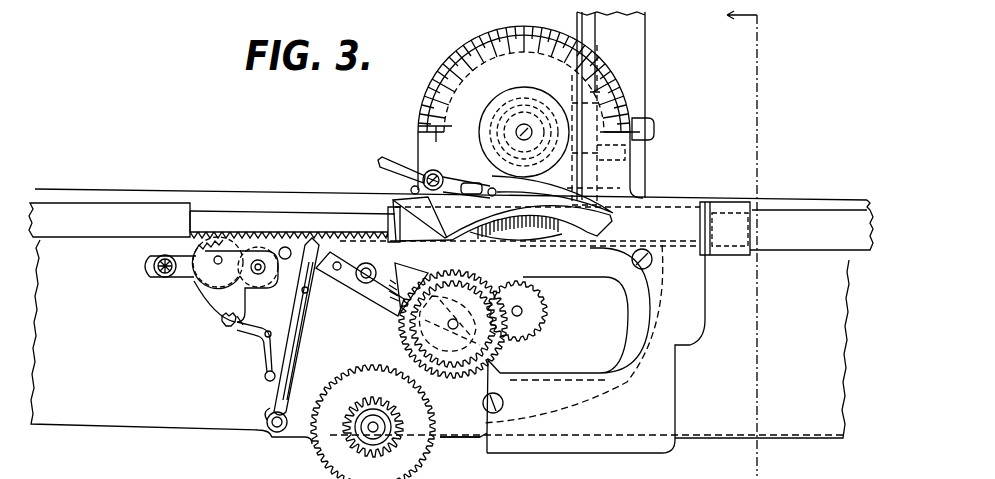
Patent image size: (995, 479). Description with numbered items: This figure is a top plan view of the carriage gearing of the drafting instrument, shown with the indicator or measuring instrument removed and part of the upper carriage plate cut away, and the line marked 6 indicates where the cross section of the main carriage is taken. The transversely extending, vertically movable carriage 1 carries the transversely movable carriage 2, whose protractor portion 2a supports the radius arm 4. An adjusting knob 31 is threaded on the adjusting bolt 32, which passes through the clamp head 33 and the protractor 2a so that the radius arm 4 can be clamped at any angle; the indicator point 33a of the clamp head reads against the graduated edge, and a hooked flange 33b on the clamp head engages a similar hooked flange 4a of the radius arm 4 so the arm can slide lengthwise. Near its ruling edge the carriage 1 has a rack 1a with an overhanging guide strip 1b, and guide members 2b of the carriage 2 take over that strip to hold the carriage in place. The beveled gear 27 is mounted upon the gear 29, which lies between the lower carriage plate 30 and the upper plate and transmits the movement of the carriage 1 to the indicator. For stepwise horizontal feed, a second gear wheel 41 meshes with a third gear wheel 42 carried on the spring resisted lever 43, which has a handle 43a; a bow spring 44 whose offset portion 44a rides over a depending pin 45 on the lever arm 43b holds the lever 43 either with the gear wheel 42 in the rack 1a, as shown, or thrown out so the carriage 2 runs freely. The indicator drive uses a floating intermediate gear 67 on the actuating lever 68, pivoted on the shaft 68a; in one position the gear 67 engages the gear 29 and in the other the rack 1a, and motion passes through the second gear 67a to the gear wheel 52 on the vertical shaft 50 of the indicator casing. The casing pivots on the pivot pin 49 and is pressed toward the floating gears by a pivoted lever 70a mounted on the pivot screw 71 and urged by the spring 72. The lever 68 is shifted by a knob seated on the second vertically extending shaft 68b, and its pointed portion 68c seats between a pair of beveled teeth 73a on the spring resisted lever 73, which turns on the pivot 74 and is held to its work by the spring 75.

The vertically movable carriage 1 is at (800, 440).
The rack 1a is at (340, 221).
The overhanging guide strip 1b is at (818, 219).
The transversely movable carriage 2 is at (695, 308).
The protractor 2a is at (452, 87).
The guide members 2b is at (735, 208).
The radius arm 4 is at (640, 74).
The hooked flange 4a is at (592, 24).
The section line 6— 6 is at (730, 243).
The second beveled gear 27 is at (372, 420).
The gear 29 is at (418, 420).
The lower carriage plate 30 is at (303, 434).
The adjusting knob 31 is at (508, 96).
The adjusting bolt 32 is at (530, 128).
The clamp head 33 is at (477, 103).
The indicator point 33a is at (642, 128).
The hooked flange 33b is at (612, 150).
The second gear wheel 41 is at (272, 268).
The third gear wheel 42 is at (195, 254).
The spring resisted lever 43 is at (182, 278).
The handle 43a is at (163, 269).
The lever arm 43b is at (222, 305).
The bow spring 44 is at (258, 338).
The offset portion of spring 44a is at (245, 324).
The depending pin 45 is at (226, 323).
The pivot pin 49 is at (488, 188).
The vertical shaft 50 is at (522, 313).
The gear wheel 52 is at (530, 310).
The floating intermediate gear 67 is at (457, 383).
The second gear 67a is at (420, 333).
The actuating lever 68 is at (382, 303).
The pivot shaft 68a is at (364, 280).
The second vertically extending shaft 68b is at (362, 255).
The pointed portion 68c is at (337, 262).
The operating lever 70a is at (392, 164).
The pivot screw 71 is at (436, 170).
The spring 72 is at (414, 185).
The spring resisted lever 73 is at (297, 338).
The beveled teeth 73a is at (452, 201).
The pivot 74 is at (279, 413).
The spring 75 is at (291, 368).